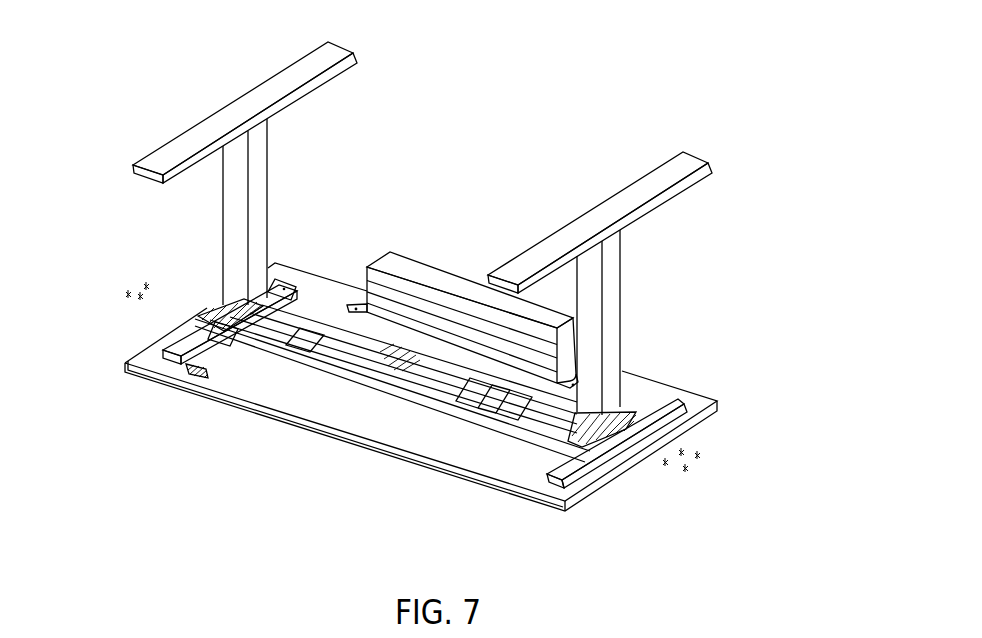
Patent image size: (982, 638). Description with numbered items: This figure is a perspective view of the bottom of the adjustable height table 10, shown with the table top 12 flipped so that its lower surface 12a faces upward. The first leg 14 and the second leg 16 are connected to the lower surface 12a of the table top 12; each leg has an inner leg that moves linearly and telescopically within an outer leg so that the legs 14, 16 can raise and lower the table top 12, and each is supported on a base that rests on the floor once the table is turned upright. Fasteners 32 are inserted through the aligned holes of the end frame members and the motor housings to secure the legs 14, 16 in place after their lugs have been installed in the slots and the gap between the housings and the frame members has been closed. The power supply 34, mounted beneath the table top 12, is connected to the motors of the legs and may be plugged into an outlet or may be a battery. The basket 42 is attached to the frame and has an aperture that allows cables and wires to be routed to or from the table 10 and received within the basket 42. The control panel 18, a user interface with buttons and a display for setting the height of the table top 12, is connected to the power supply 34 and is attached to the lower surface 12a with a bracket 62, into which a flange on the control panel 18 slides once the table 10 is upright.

The table 10 is at (774, 133).
The table top 12 is at (597, 493).
The lower surface 12a is at (343, 398).
The first leg 14 is at (257, 192).
The second leg 16 is at (607, 298).
The control panel 18 is at (185, 370).
The fasteners 32 is at (710, 453).
The power supply 34 is at (427, 372).
The basket 42 is at (402, 265).
The bracket 62 is at (187, 370).